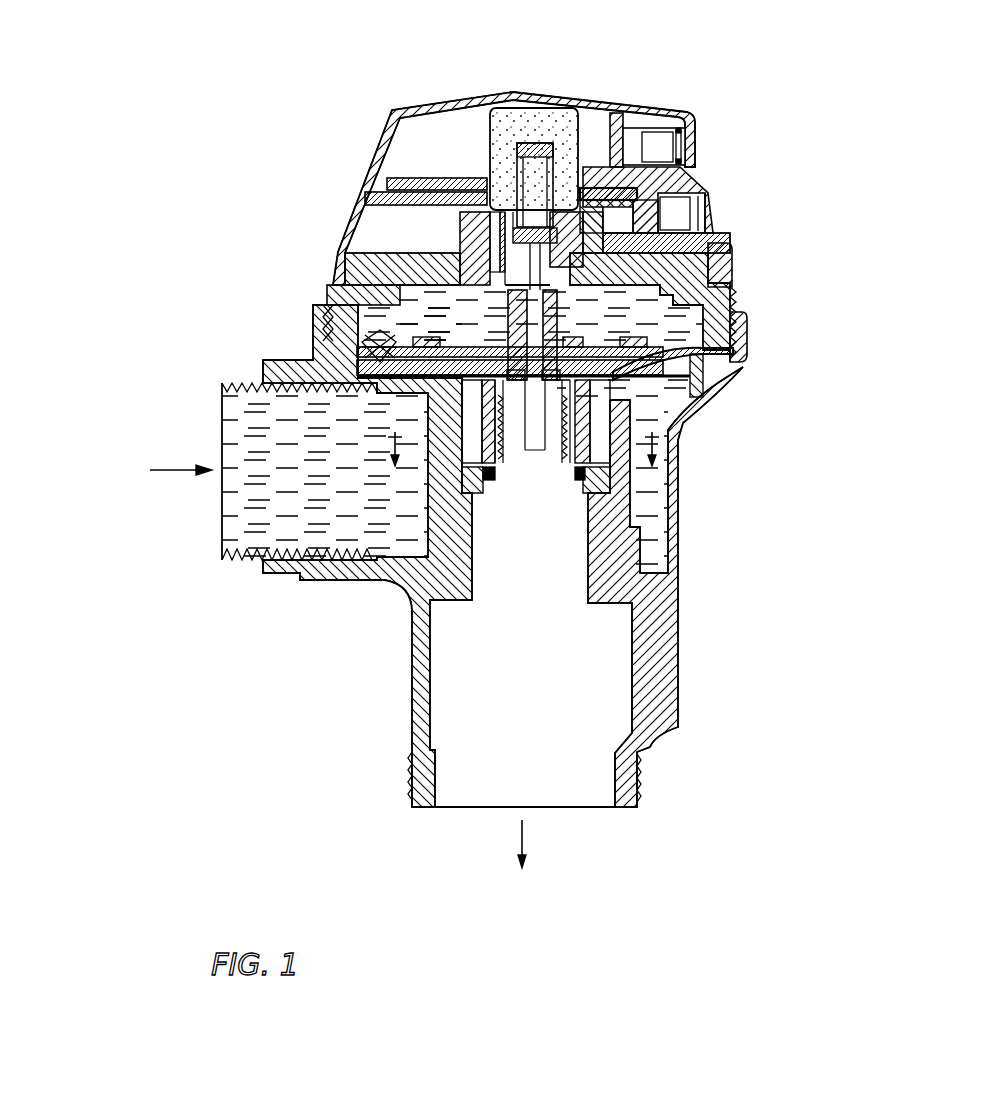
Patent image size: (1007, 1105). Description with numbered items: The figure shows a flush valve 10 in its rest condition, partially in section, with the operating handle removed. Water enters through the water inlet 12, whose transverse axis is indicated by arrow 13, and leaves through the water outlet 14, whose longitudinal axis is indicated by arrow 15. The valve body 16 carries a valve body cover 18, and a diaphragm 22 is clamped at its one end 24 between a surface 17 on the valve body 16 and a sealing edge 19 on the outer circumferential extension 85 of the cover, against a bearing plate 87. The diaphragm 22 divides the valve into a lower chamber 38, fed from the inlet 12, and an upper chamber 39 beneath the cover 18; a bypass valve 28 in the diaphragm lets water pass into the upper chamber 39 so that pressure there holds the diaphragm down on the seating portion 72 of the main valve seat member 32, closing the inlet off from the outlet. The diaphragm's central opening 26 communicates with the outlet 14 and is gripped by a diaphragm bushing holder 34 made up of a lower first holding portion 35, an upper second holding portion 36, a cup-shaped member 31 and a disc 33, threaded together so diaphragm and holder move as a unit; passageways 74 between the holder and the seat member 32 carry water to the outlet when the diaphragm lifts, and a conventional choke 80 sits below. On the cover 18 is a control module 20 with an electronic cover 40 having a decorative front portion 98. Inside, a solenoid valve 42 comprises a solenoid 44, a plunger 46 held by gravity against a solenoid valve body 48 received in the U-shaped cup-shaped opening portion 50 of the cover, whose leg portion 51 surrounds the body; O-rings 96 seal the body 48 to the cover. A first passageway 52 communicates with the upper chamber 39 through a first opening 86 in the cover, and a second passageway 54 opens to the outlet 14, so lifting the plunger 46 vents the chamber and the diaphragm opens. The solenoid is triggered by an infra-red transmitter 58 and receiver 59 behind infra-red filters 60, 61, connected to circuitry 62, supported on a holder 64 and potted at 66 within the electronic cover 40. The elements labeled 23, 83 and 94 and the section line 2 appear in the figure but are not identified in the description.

The flush valve 10 is at (363, 755).
The water inlet 12 is at (179, 472).
The arrow 13 is at (175, 468).
The water outlet 14 is at (508, 765).
The arrow 15 is at (520, 838).
The valve body 16 is at (712, 388).
The surface 17 is at (705, 372).
The valve body cover 18 is at (360, 268).
The sealing edge 19 is at (742, 338).
The control module 20 is at (692, 95).
The diaphragm 22 is at (700, 398).
The valve stem 23 is at (545, 452).
The one end of diaphragm 24 is at (748, 355).
The central opening 26 is at (745, 318).
The bypass valve 28 is at (330, 362).
The cup-shaped member 31 is at (300, 378).
The main valve seat member 32 is at (425, 493).
The disc 33 is at (450, 338).
The diaphragm bushing holder 34 is at (400, 298).
The first holding portion 35 is at (490, 480).
The second holding portion 36 is at (512, 382).
The lower chamber 38 is at (345, 459).
The upper chamber 39 is at (478, 309).
The electronic cover 40 is at (423, 103).
The solenoid valve 42 is at (473, 180).
The solenoid 44 is at (487, 147).
The solenoid plunger 46 is at (538, 104).
The solenoid valve body 48 is at (725, 276).
The cup-shaped opening portion 50 is at (675, 214).
The leg portion 51 is at (497, 240).
The first passageway 52 is at (470, 237).
The second passageway 54 is at (700, 245).
The infra-red transmitter 58 is at (693, 160).
The infra-red receiver 59 is at (668, 205).
The infra-red filter 60 is at (683, 145).
The infra-red filter 61 is at (705, 226).
The circuitry 62 is at (455, 195).
The holder 64 is at (605, 98).
The potting 66 is at (458, 192).
The seating portion 72 is at (648, 405).
The passageways 74 is at (568, 440).
The choke 80 is at (585, 490).
The spring 83 is at (504, 425).
The outer circumferential extension 85 is at (335, 330).
The first opening 86 is at (390, 282).
The bearing plate 87 is at (372, 355).
The spring 94 is at (563, 420).
The solenoid chamber O-rings 96 is at (715, 297).
The decorative front portion 98 is at (722, 156).
The section line 2 is at (386, 480).